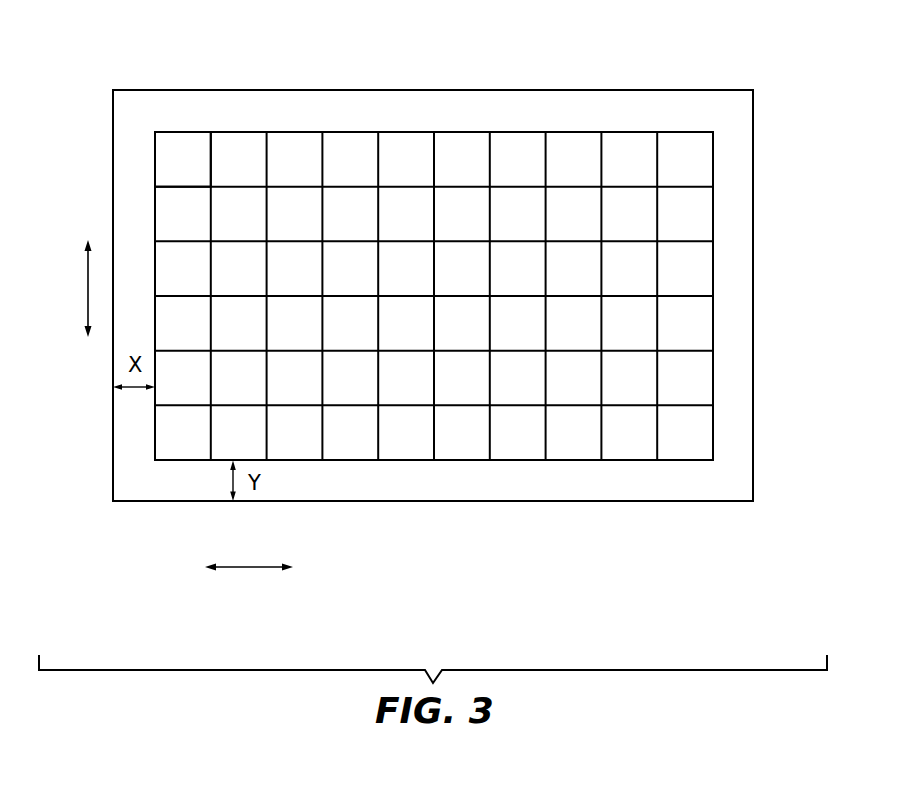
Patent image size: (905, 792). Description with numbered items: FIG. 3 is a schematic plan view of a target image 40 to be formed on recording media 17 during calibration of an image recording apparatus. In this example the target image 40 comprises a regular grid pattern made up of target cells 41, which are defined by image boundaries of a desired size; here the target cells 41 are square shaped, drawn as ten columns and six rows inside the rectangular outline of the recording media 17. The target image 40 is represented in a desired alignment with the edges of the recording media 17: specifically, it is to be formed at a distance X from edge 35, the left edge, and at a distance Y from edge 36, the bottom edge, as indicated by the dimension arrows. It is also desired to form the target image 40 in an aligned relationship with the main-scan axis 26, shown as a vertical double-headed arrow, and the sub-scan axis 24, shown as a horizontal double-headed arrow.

The recording media 17 is at (753, 435).
The sub-scan axis 24 is at (250, 567).
The main-scan axis 26 is at (88, 292).
The edge 35 is at (113, 435).
The edge 36 is at (167, 501).
The target image 40 is at (713, 254).
The target cells 41 is at (183, 137).